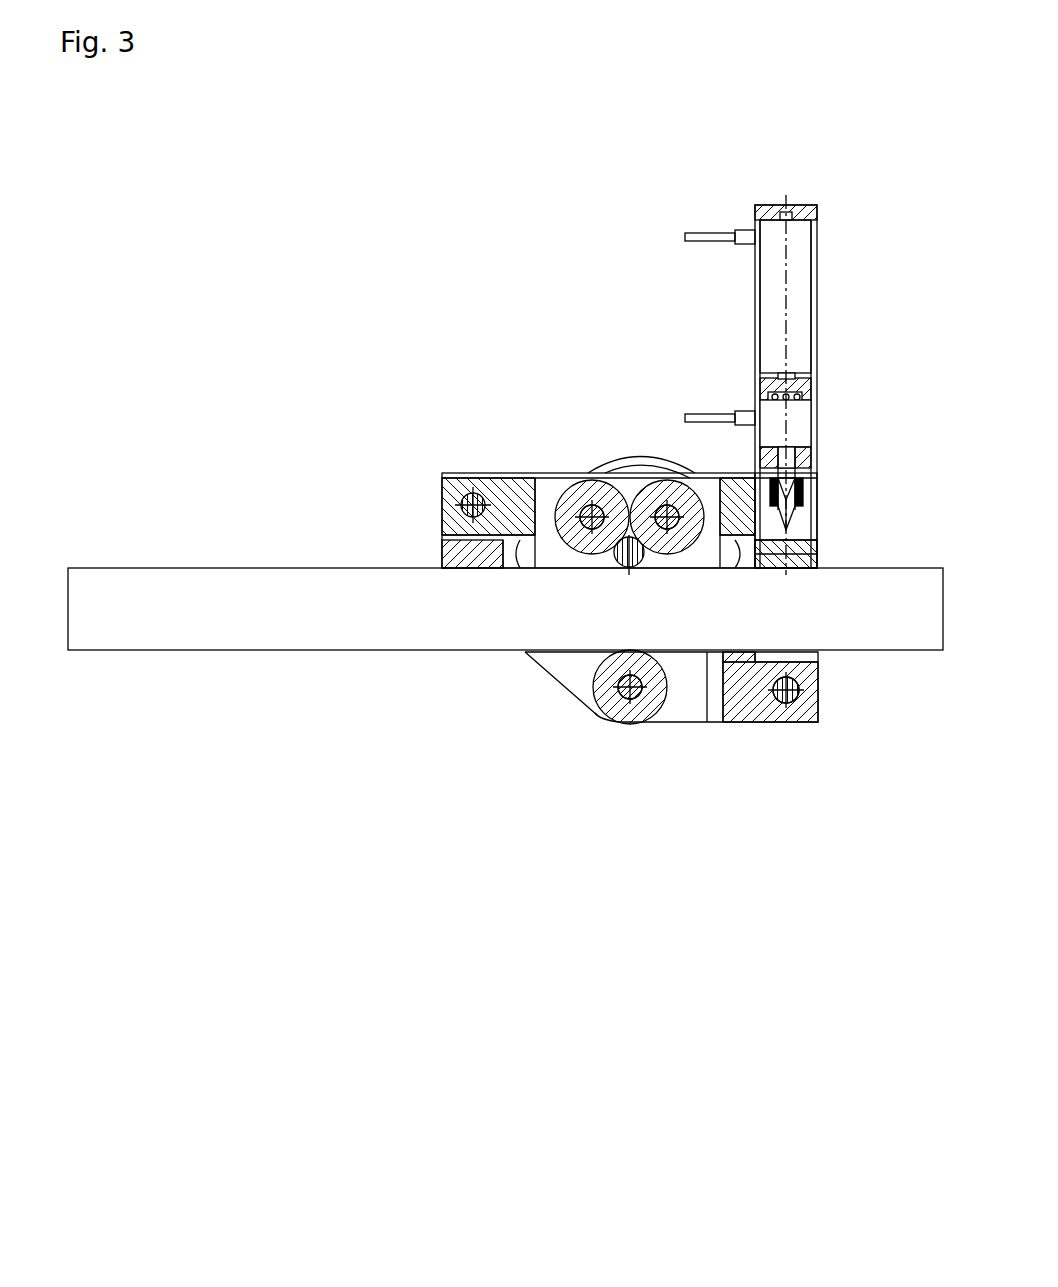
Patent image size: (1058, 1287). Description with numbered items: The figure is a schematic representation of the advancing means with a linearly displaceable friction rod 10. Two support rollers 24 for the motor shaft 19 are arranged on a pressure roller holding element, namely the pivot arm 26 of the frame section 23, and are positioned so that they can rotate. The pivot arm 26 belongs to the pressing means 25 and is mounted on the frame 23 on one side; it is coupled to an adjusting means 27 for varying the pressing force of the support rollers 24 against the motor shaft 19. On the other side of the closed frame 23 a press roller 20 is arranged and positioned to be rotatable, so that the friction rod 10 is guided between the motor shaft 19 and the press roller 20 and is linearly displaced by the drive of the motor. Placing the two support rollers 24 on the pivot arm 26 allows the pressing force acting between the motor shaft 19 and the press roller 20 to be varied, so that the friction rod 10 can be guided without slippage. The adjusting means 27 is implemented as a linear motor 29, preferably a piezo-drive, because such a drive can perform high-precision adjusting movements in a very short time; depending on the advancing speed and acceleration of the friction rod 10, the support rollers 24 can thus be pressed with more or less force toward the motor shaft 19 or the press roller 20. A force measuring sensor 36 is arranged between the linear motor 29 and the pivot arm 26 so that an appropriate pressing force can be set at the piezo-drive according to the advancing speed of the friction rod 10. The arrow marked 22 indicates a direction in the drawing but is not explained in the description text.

The friction rod 10 is at (218, 596).
The motor shaft 19 is at (617, 563).
The press roller 20 is at (640, 712).
The transport direction 22 is at (336, 970).
The frame section 23 is at (692, 712).
The support rollers 24 is at (652, 488).
The pressing means 25 is at (698, 204).
The pivot arm 26 is at (510, 493).
The adjusting means 27 is at (687, 322).
The linear motor 29 is at (687, 322).
The force measuring sensor 36 is at (811, 434).